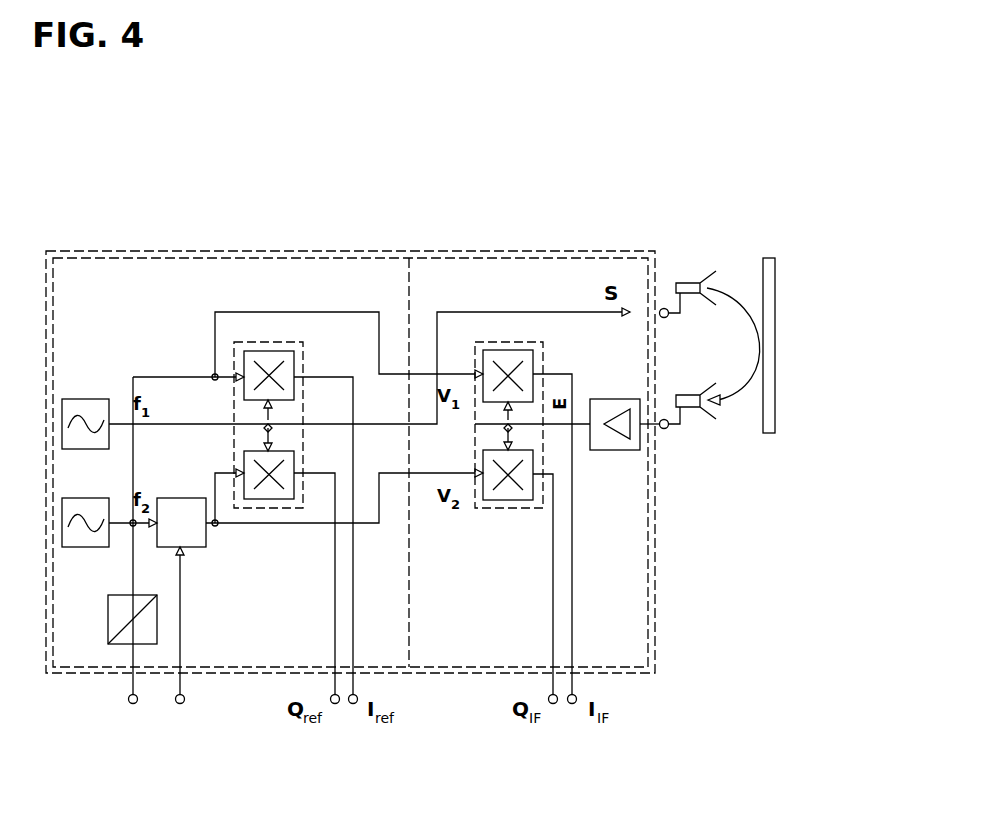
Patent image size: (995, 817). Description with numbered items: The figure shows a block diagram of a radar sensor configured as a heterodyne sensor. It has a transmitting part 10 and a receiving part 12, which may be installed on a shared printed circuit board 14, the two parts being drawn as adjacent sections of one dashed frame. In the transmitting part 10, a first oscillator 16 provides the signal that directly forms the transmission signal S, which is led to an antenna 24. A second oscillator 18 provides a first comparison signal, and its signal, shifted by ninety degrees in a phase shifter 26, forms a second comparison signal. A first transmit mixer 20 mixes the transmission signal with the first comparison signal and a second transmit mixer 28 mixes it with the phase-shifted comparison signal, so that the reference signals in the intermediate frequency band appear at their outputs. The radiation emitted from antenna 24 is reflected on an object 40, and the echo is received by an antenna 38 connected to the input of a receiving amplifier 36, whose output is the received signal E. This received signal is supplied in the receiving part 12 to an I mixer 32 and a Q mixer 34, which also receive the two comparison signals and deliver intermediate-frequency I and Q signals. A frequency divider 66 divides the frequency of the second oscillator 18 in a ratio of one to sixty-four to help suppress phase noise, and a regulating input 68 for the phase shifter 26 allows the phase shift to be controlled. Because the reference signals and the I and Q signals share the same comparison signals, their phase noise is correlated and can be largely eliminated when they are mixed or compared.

The transmitting part 10 is at (131, 272).
The receiving part 12 is at (563, 272).
The printed circuit board 14 is at (288, 253).
The first oscillator 16 is at (85, 399).
The second oscillator 18 is at (85, 547).
The first transmit mixer 20 is at (268, 351).
The antenna 24 is at (686, 282).
The phase shifter 26 is at (196, 547).
The second transmit mixer 28 is at (268, 499).
The I mixer 32 is at (510, 350).
The Q mixer 34 is at (508, 500).
The receiving amplifier 36 is at (612, 451).
The antenna 38 is at (693, 408).
The object 40 is at (772, 433).
The frequency divider 66 is at (112, 648).
The regulating input 68 is at (180, 704).